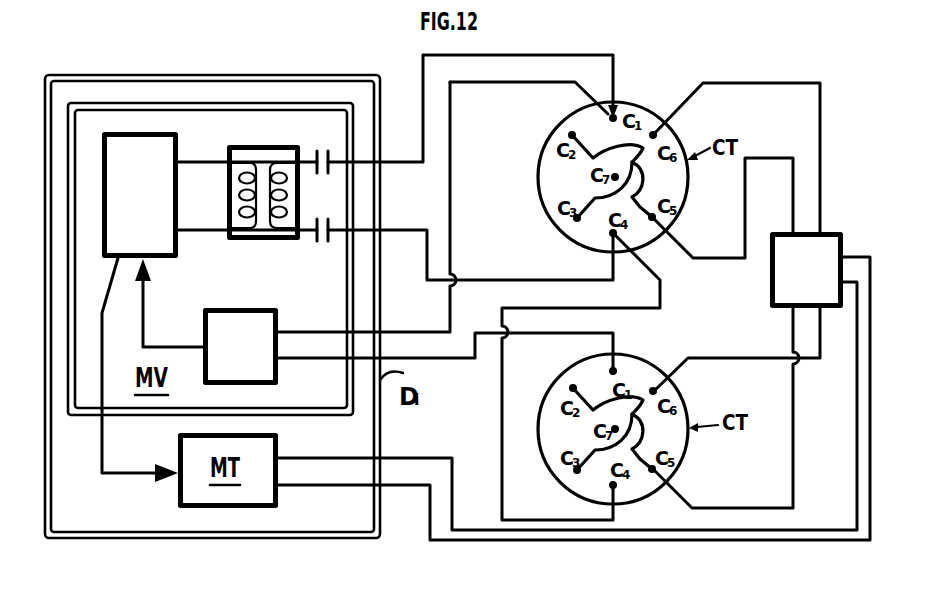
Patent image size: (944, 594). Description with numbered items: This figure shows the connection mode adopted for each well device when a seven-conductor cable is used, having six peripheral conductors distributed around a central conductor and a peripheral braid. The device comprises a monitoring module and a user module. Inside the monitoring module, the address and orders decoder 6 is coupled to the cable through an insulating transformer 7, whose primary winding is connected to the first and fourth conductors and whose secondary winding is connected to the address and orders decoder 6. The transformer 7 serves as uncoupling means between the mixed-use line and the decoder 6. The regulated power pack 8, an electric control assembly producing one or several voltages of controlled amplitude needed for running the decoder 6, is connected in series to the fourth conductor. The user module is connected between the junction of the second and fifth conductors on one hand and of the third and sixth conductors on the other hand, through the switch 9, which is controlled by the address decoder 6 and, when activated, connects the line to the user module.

The address and orders decoder 6 is at (150, 258).
The insulating transformer 7 is at (275, 242).
The electric control assembly 8 is at (243, 308).
The switch 9 is at (813, 284).